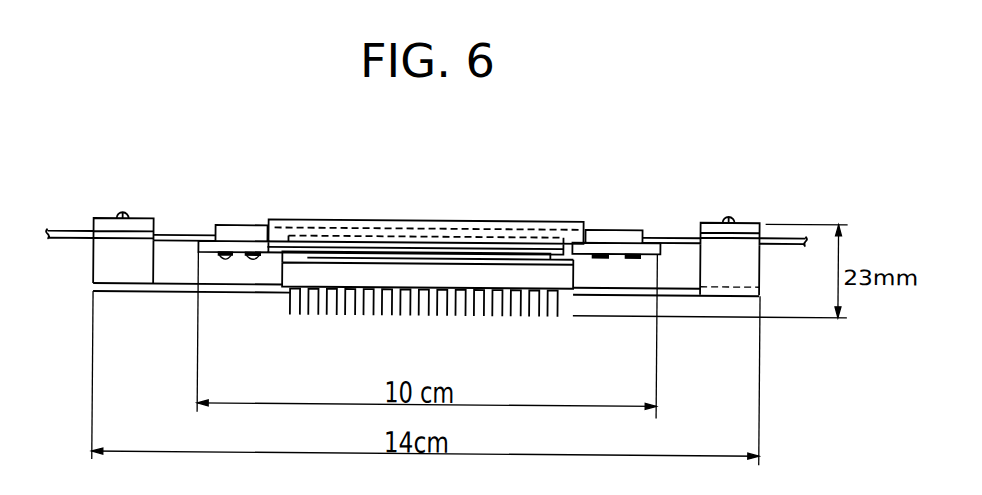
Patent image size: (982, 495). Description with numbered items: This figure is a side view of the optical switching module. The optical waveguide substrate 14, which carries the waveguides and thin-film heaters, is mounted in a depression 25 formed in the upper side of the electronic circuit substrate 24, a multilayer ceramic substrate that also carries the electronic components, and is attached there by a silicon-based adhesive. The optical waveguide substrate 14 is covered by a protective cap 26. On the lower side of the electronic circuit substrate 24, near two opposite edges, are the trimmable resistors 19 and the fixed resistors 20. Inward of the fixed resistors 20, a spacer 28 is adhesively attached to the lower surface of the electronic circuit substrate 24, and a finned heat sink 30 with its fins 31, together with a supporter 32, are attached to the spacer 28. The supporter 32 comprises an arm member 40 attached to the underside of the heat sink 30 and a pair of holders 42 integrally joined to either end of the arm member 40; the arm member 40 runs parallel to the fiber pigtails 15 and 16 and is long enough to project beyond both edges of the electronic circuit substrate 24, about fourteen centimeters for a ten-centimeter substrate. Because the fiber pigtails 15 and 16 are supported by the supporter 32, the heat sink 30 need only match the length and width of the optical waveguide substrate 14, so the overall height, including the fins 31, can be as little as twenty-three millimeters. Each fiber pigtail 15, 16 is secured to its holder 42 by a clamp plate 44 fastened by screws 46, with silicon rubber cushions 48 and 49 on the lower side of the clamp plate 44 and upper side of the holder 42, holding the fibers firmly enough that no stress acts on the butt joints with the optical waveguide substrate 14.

The optical waveguide substrate 14 is at (437, 238).
The fiber pigtail 15 is at (190, 233).
The fiber pigtail 16 is at (673, 233).
The trimmable resistor 19 is at (226, 254).
The fixed resistor 20 is at (258, 254).
The electronic circuit substrate 24 is at (606, 239).
The depression 25 is at (578, 254).
The protective cap 26 is at (549, 218).
The spacer 28 is at (468, 258).
The finned heat sink 30 is at (423, 322).
The fin 31 is at (296, 314).
The supporter 32 is at (180, 293).
The arm member 40 is at (230, 290).
The holder 42 is at (120, 278).
The clamp plate 44 is at (147, 219).
The screw 46 is at (120, 214).
The silicon rubber cushion 48 is at (95, 231).
The silicon rubber cushion 49 is at (108, 240).